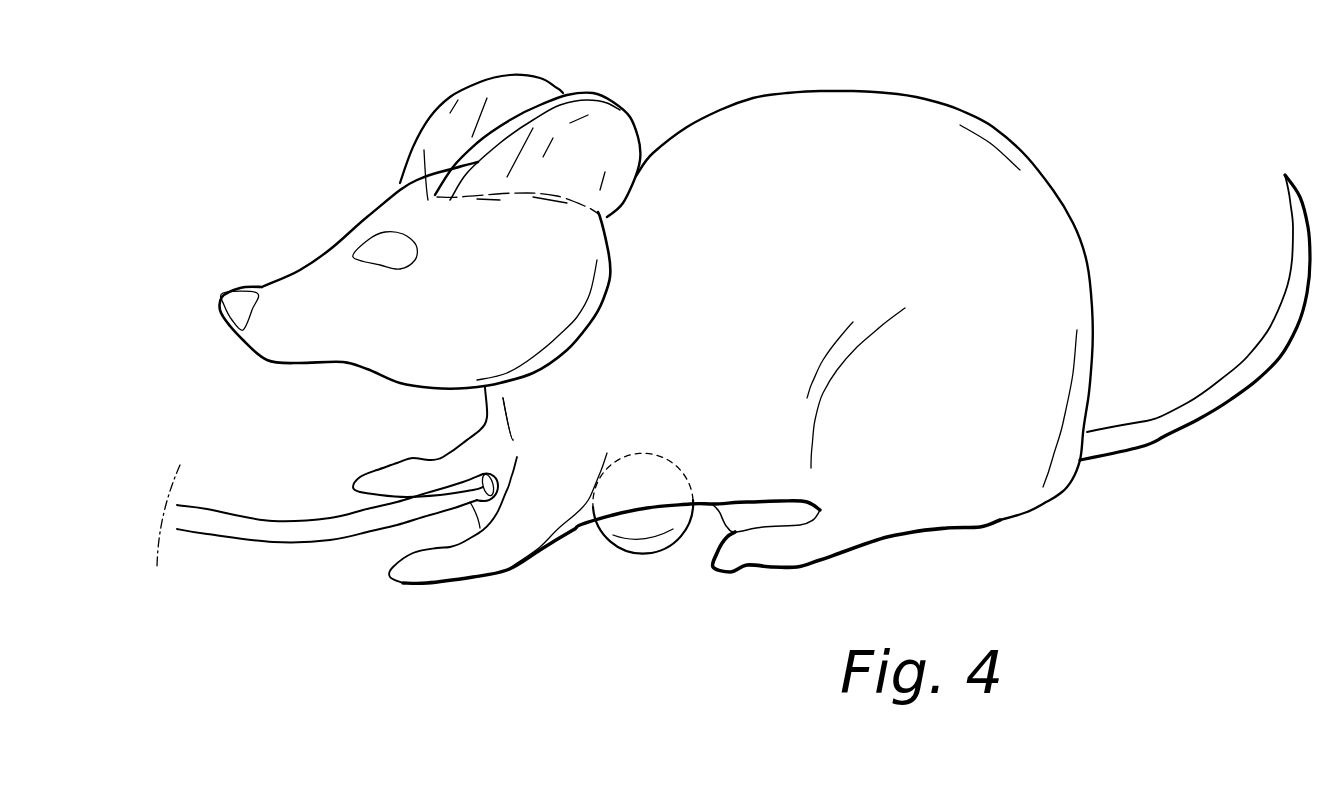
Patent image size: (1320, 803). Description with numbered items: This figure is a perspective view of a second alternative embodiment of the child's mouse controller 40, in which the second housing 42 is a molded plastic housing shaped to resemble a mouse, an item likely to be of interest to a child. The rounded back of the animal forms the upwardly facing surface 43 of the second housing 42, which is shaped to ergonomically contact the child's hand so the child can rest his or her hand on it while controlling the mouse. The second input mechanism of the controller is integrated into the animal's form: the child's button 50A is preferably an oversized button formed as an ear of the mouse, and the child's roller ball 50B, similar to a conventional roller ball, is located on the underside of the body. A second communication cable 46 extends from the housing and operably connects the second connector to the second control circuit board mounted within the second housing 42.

The child's mouse controller 40 is at (256, 158).
The second housing 42 is at (374, 218).
The upwardly facing surface 43 is at (898, 95).
The second communication cable 46 is at (257, 532).
The child's button 50A is at (447, 238).
The child's roller ball 50B is at (613, 528).